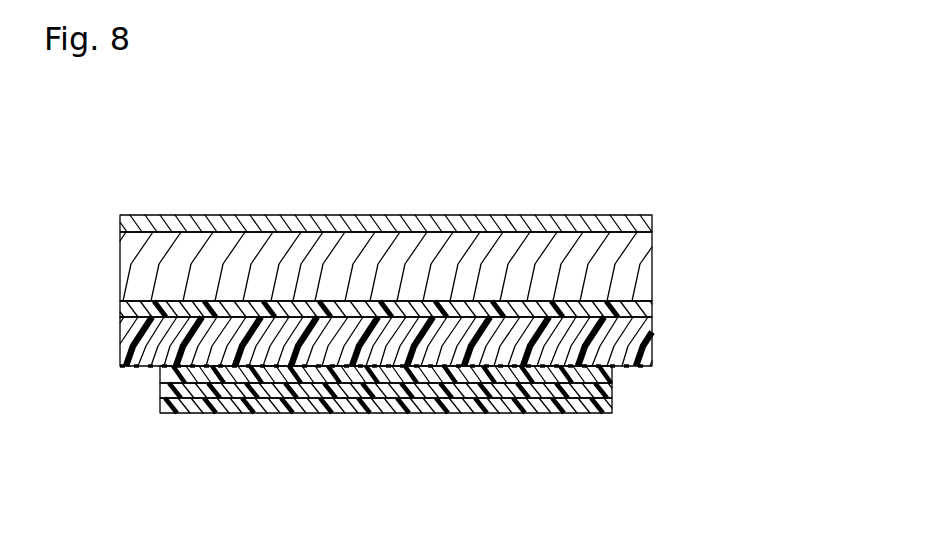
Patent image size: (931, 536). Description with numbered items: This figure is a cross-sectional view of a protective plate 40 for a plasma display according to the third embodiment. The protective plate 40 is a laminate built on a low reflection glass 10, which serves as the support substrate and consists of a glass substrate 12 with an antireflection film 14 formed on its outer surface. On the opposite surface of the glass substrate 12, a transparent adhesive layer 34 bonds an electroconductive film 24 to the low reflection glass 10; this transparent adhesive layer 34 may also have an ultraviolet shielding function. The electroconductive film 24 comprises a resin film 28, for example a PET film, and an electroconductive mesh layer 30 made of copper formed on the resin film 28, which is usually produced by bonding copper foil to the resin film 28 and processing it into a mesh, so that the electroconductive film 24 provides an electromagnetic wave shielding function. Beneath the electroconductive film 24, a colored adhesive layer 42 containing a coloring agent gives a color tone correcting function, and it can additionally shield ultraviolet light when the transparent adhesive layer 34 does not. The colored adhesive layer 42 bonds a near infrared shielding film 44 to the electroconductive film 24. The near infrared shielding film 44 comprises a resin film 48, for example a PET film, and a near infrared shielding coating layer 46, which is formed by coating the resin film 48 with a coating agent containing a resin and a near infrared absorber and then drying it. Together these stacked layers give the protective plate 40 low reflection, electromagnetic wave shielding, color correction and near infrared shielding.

The protective plate 40 is at (398, 196).
The low reflection glass 10 is at (732, 204).
The antireflection film 14 is at (652, 223).
The glass substrate 12 is at (650, 268).
The transparent adhesive layer 34 is at (652, 307).
The electroconductive film 24 is at (730, 330).
The resin film 28 is at (650, 345).
The electroconductive mesh layer 30 is at (648, 366).
The colored adhesive layer 42 is at (612, 372).
The near infrared shielding film 44 is at (687, 431).
The near infrared shielding coating layer 46 is at (612, 388).
The resin film 48 is at (612, 405).